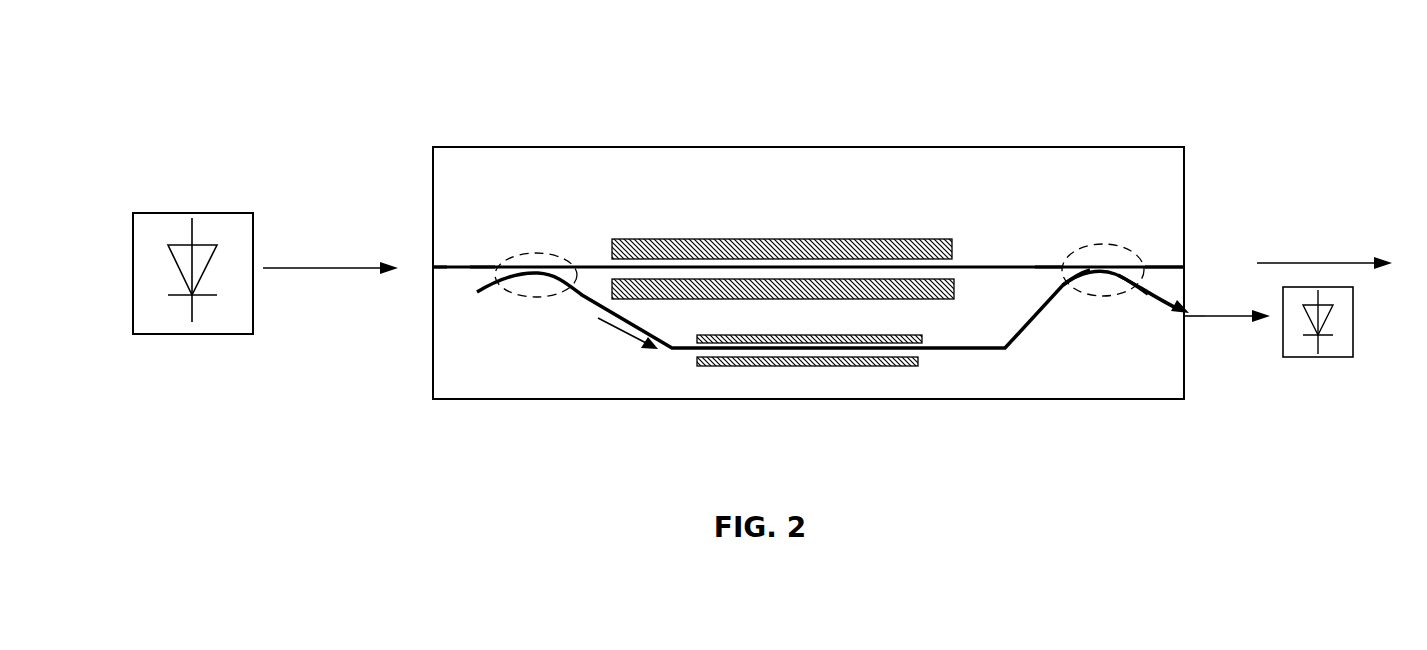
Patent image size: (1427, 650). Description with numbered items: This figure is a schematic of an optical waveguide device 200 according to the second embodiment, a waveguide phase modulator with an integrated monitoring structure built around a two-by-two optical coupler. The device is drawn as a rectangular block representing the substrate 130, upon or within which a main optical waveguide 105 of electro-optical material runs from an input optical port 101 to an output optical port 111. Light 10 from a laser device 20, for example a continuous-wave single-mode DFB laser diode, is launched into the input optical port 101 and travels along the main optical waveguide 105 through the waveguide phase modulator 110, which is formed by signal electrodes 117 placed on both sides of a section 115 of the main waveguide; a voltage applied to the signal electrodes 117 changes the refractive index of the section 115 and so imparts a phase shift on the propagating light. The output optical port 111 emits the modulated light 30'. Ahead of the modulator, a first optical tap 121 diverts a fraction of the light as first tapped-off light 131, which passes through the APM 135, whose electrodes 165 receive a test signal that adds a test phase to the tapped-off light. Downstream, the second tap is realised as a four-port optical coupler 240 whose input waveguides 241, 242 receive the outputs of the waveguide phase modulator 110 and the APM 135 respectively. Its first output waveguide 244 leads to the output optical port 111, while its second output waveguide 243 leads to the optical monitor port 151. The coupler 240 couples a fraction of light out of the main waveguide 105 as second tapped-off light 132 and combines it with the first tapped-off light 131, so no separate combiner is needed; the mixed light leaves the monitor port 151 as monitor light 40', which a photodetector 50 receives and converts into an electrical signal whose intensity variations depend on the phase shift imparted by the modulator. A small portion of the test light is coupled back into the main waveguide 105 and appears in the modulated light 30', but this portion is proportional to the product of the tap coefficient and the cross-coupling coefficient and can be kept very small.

The light 10 is at (340, 275).
The laser device 20 is at (160, 335).
The modulated light 30' is at (1324, 227).
The monitor light 40' is at (1263, 371).
The photodetector 50 is at (1338, 358).
The input optical port 101 is at (432, 267).
The main optical waveguide 105 is at (480, 262).
The waveguide phase modulator 110 is at (818, 205).
The output optical port 111 is at (1195, 267).
The section of main optical waveguide 115 is at (760, 260).
The signal electrodes 117 is at (653, 236).
The first optical tap 121 is at (556, 295).
The substrate 130 is at (491, 179).
The first tapped-off light 131 is at (630, 333).
The second tapped-off light 132 is at (1163, 305).
The APM 135 is at (852, 385).
The optical monitor port 151 is at (1188, 320).
The upper electrode of curved waveguide 165 is at (777, 350).
The optical waveguide device 200 is at (752, 147).
The optical coupler 240 is at (1086, 247).
The first input waveguide 241 is at (1045, 267).
The second input waveguide 242 is at (1068, 288).
The second output waveguide 243 is at (1130, 285).
The first output waveguide 244 is at (1157, 267).